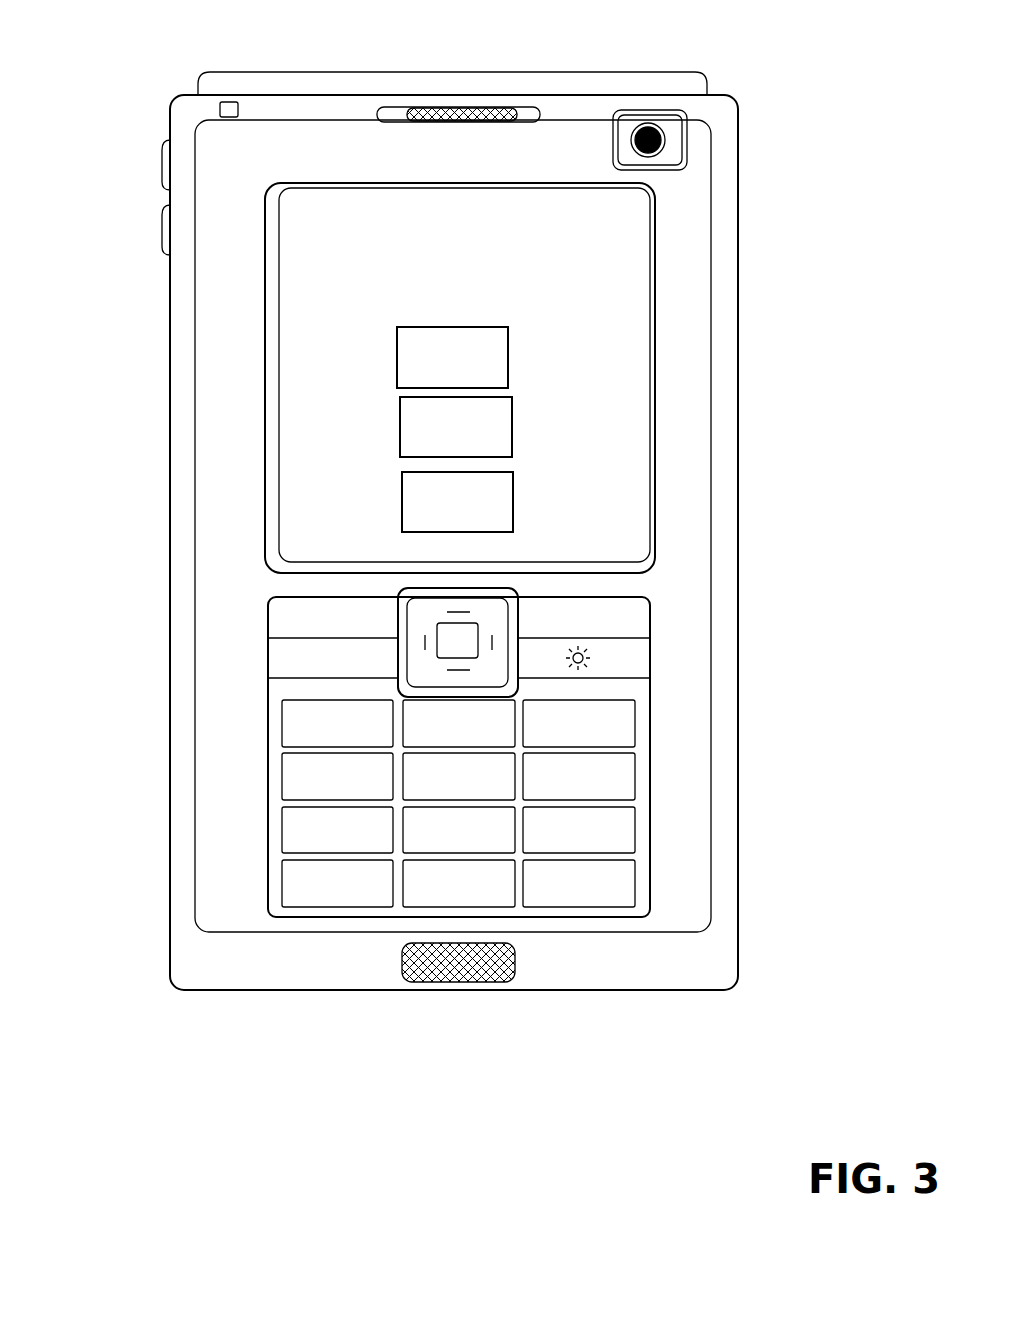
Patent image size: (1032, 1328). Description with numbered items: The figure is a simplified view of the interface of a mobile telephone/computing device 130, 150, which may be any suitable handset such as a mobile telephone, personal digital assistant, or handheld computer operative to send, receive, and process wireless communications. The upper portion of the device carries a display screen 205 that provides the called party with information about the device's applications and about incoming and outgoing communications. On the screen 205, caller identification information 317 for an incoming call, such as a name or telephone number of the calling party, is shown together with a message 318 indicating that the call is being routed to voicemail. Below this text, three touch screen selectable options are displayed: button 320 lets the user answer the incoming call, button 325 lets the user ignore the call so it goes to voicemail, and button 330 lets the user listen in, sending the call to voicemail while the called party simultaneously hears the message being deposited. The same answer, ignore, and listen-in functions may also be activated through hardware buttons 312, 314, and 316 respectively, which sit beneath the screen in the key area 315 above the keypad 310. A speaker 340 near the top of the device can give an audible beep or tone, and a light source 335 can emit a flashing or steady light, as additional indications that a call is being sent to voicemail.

The mobile computing device 130 is at (160, 100).
The mobile computing device 150 is at (375, 494).
The display screen 205 is at (290, 278).
The keypad 310 is at (298, 778).
The hardware button 312 is at (283, 620).
The hardware button 314 is at (378, 660).
The softkey area 315 is at (268, 652).
The hardware button 316 is at (580, 608).
The caller identification information 317 is at (608, 226).
The message 318 is at (563, 294).
The touch screen selectable button 320 is at (397, 345).
The button 325 is at (400, 420).
The button 330 is at (402, 490).
The light source 335 is at (602, 660).
The speaker 340 is at (460, 110).